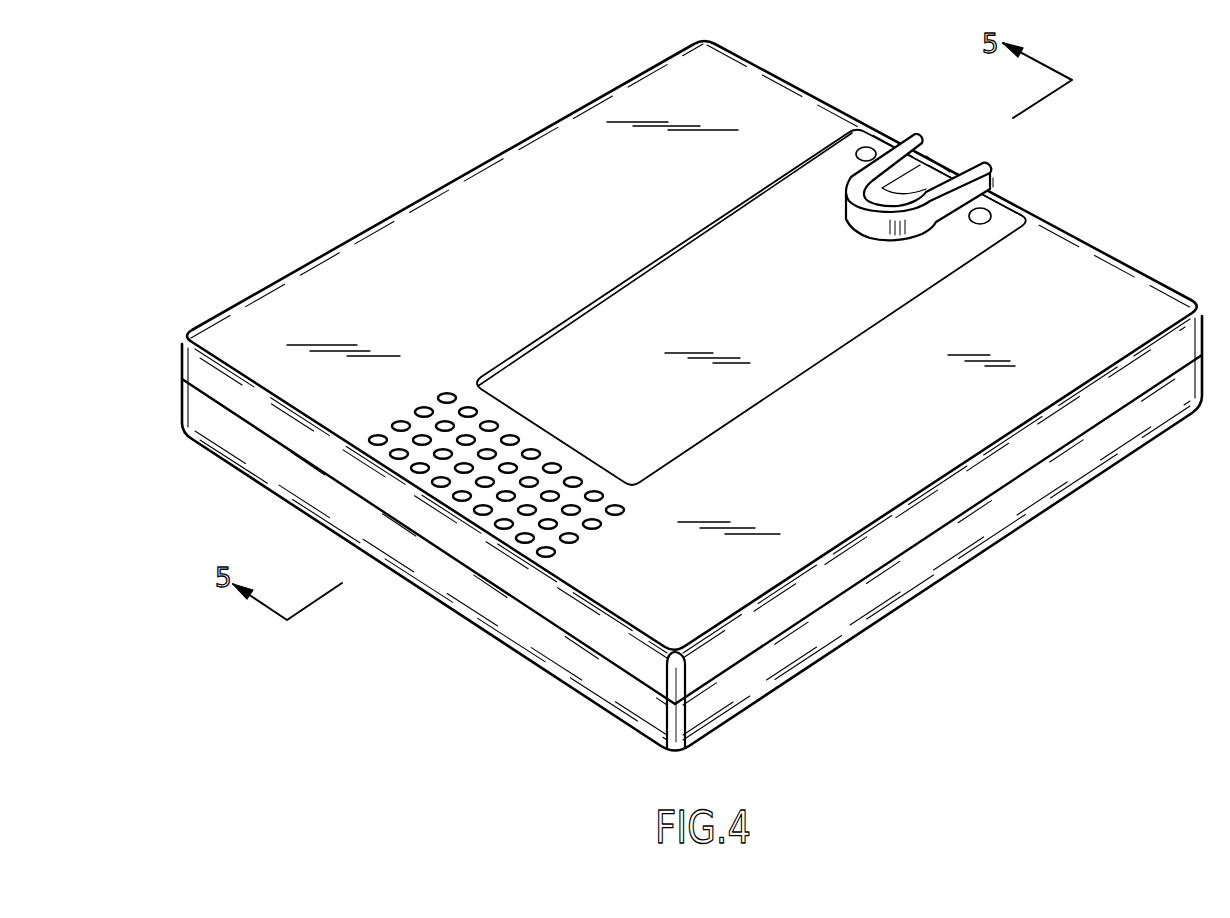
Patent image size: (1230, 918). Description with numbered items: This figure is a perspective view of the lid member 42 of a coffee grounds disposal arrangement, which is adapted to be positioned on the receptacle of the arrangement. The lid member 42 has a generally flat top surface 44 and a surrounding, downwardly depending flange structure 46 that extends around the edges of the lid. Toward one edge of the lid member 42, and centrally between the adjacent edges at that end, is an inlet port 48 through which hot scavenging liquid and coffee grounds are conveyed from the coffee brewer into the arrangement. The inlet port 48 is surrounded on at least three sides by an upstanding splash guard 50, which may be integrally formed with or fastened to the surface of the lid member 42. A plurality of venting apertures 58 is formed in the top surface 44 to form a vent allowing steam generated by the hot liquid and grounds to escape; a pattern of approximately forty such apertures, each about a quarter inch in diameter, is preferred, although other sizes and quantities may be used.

The lid member 42 is at (445, 181).
The top surface 44 is at (843, 457).
The flange structure 46 is at (985, 547).
The inlet port 48 is at (978, 181).
The splash guard 50 is at (995, 183).
The venting apertures 58 is at (527, 542).